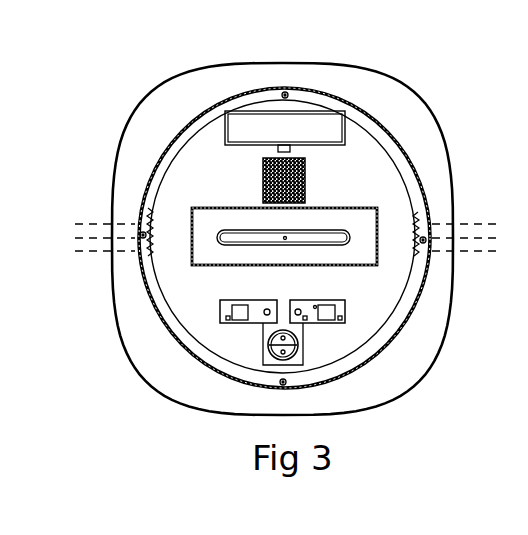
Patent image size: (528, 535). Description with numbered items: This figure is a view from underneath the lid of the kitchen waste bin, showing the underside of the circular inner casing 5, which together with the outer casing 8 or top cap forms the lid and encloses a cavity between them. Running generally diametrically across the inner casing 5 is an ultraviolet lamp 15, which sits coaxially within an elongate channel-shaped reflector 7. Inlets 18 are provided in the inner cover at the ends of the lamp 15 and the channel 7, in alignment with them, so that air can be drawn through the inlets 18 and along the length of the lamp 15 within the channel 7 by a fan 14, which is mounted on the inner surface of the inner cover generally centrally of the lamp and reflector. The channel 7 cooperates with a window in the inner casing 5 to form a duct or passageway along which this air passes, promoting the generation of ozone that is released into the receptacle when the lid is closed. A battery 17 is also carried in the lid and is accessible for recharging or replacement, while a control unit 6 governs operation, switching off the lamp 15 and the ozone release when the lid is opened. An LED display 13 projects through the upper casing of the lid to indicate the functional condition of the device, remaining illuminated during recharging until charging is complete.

The inner casing 5 is at (408, 323).
The control unit 6 is at (223, 322).
The channel-shaped reflector 7 is at (377, 262).
The outer casing 8 is at (421, 382).
The LED display 13 is at (272, 343).
The fan 14 is at (303, 172).
The ultraviolet lamp 15 is at (218, 237).
The battery 17 is at (242, 128).
The inlets 18 is at (152, 220).